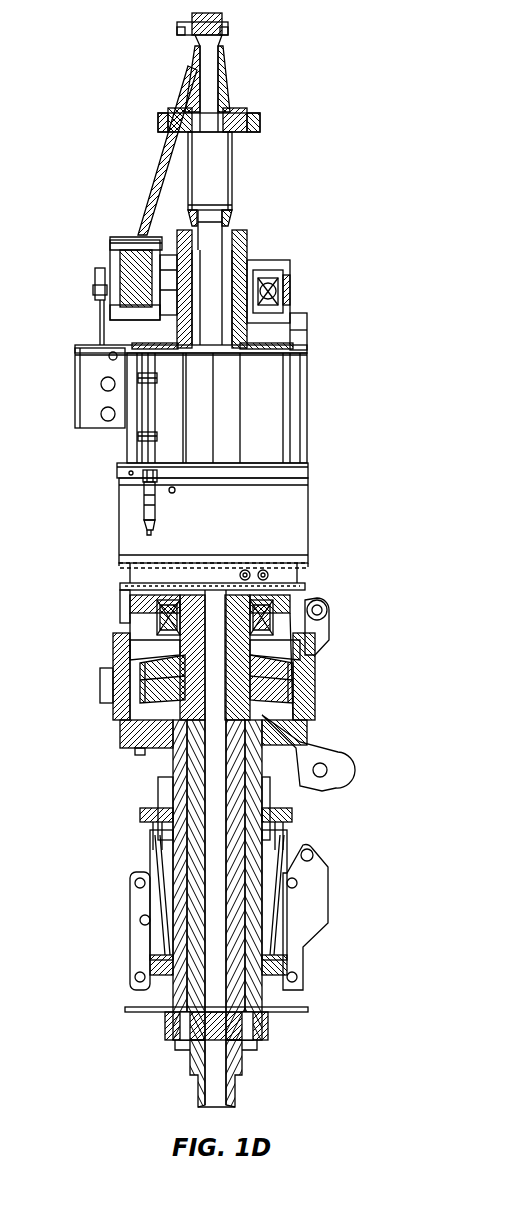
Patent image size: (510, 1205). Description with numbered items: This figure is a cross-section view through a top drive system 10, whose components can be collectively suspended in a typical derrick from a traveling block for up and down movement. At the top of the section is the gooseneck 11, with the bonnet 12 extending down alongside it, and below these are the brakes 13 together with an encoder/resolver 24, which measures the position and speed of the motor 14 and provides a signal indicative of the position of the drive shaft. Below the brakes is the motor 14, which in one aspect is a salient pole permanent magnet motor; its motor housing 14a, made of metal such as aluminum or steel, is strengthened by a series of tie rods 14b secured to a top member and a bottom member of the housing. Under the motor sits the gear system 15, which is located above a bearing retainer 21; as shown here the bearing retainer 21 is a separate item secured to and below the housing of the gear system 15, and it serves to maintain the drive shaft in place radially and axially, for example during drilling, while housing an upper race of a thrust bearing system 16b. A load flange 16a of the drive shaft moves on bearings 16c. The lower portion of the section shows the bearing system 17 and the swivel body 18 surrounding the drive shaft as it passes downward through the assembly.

The top drive system 10 is at (293, 137).
The gooseneck 11 is at (225, 98).
The bonnet 12 is at (152, 163).
The brakes 13 is at (292, 273).
The encoder/resolver 24 is at (122, 264).
The motor 14 is at (132, 457).
The motor housing 14a is at (267, 403).
The tie rods 14b is at (180, 403).
The gear system 15 is at (125, 517).
The bearing retainer 21 is at (294, 579).
The load flange 16a is at (157, 658).
The thrust bearing system 16b is at (130, 610).
The bearings 16c is at (282, 680).
The bearing system 17 is at (307, 648).
The swivel body 18 is at (113, 650).